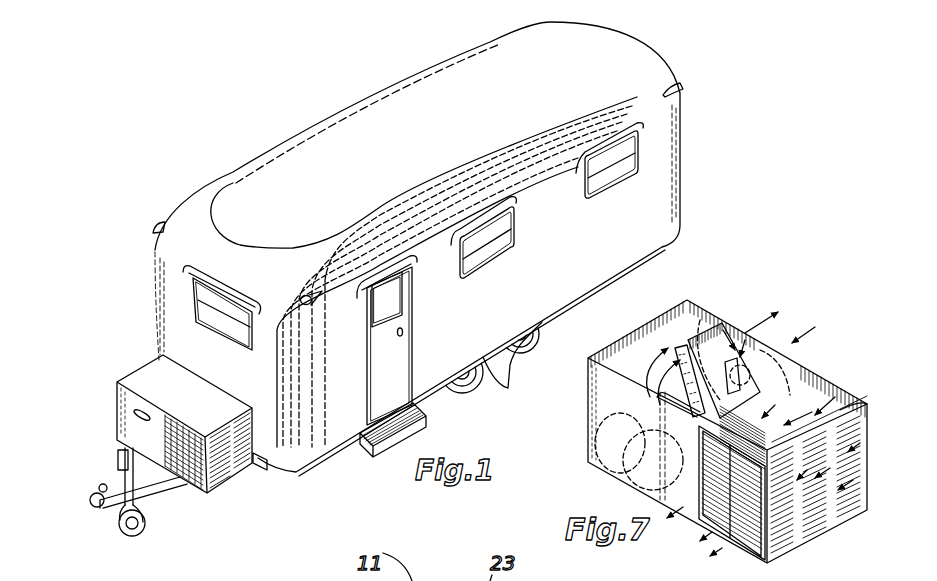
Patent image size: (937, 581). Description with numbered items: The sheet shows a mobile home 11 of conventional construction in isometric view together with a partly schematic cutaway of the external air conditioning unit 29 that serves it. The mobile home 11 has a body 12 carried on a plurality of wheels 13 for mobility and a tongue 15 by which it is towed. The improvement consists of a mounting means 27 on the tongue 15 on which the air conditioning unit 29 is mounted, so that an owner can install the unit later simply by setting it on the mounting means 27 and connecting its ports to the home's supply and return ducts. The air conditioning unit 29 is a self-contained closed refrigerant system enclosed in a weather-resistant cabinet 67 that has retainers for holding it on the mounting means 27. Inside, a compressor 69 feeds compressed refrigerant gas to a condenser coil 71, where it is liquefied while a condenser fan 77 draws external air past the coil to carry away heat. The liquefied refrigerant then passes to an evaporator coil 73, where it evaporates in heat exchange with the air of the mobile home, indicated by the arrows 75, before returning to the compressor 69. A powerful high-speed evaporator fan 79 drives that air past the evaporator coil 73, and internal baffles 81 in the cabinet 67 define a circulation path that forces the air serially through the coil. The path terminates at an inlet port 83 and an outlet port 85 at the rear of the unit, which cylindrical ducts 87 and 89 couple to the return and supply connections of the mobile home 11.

In FIG. 1, the mobile home 11 is at (232, 185).
In FIG. 1, the body 12 is at (166, 240).
In FIG. 1, the wheels 13 is at (507, 389).
In FIG. 1, the tongue 15 is at (167, 487).
In FIG. 1, the mounting means 27 is at (207, 493).
In FIG. 1, the air conditioning unit 29 is at (154, 465).
In FIG. 7, the air conditioning unit 29 is at (716, 415).
In FIG. 1, the cabinet 67 is at (133, 372).
In FIG. 7, the compressor 69 is at (590, 452).
In FIG. 7, the condenser coil 71 is at (832, 412).
In FIG. 7, the evaporator coil 73 is at (662, 348).
In FIG. 7, the arrows 75 is at (748, 342).
In FIG. 7, the condenser fan 77 is at (788, 555).
In FIG. 7, the evaporator fan 79 is at (822, 380).
In FIG. 7, the internal baffles 81 is at (725, 333).
In FIG. 7, the inlet port 83 is at (760, 330).
In FIG. 7, the outlet port 85 is at (690, 347).
In FIG. 7, the cylindrical duct 87 is at (702, 320).
In FIG. 7, the cylindrical duct 89 is at (798, 340).